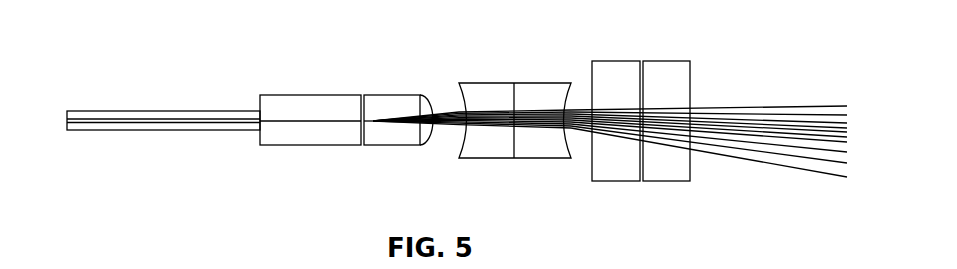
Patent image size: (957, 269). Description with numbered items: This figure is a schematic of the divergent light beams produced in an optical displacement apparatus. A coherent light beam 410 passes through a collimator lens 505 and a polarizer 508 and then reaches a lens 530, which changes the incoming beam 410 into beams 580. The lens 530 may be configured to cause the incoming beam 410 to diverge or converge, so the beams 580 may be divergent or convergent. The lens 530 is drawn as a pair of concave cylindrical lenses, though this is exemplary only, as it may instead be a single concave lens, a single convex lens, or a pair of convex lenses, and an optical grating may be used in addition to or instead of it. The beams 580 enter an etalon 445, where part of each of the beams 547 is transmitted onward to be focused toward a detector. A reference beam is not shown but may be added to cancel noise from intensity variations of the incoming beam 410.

The coherent light beam 410 is at (92, 110).
The collimator lens 505 is at (285, 94).
The polarizer 508 is at (380, 94).
The lens 530 is at (487, 82).
The etalon 445 is at (608, 59).
The beams 580 is at (456, 127).
The beams 547 is at (800, 168).